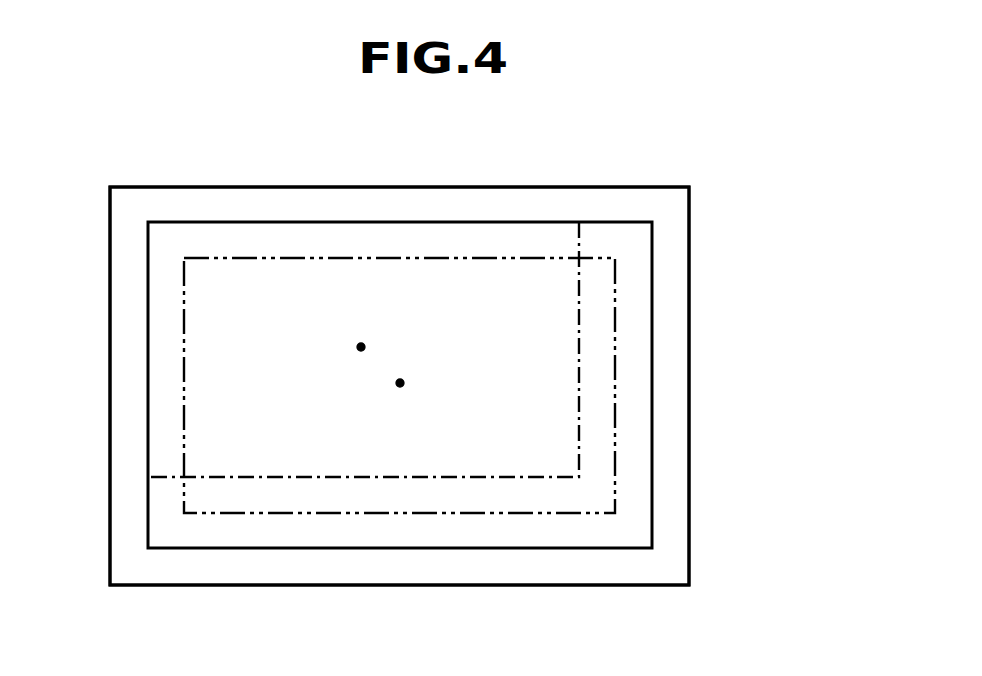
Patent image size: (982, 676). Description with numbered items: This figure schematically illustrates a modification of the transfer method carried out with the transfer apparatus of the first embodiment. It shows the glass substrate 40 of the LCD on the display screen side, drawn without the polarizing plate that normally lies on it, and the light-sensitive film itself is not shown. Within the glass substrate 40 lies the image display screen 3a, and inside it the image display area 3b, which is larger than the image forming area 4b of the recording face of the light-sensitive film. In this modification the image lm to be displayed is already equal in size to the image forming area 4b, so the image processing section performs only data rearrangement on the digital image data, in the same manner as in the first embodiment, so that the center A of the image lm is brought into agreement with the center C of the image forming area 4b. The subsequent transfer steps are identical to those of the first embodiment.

The glass substrate 40 is at (609, 155).
The image display screen 3a is at (672, 228).
The image display area 3b is at (642, 290).
The image forming area 4b is at (605, 344).
The image lm is at (557, 423).
The center of the image A is at (361, 347).
The center of the image forming area C is at (400, 383).